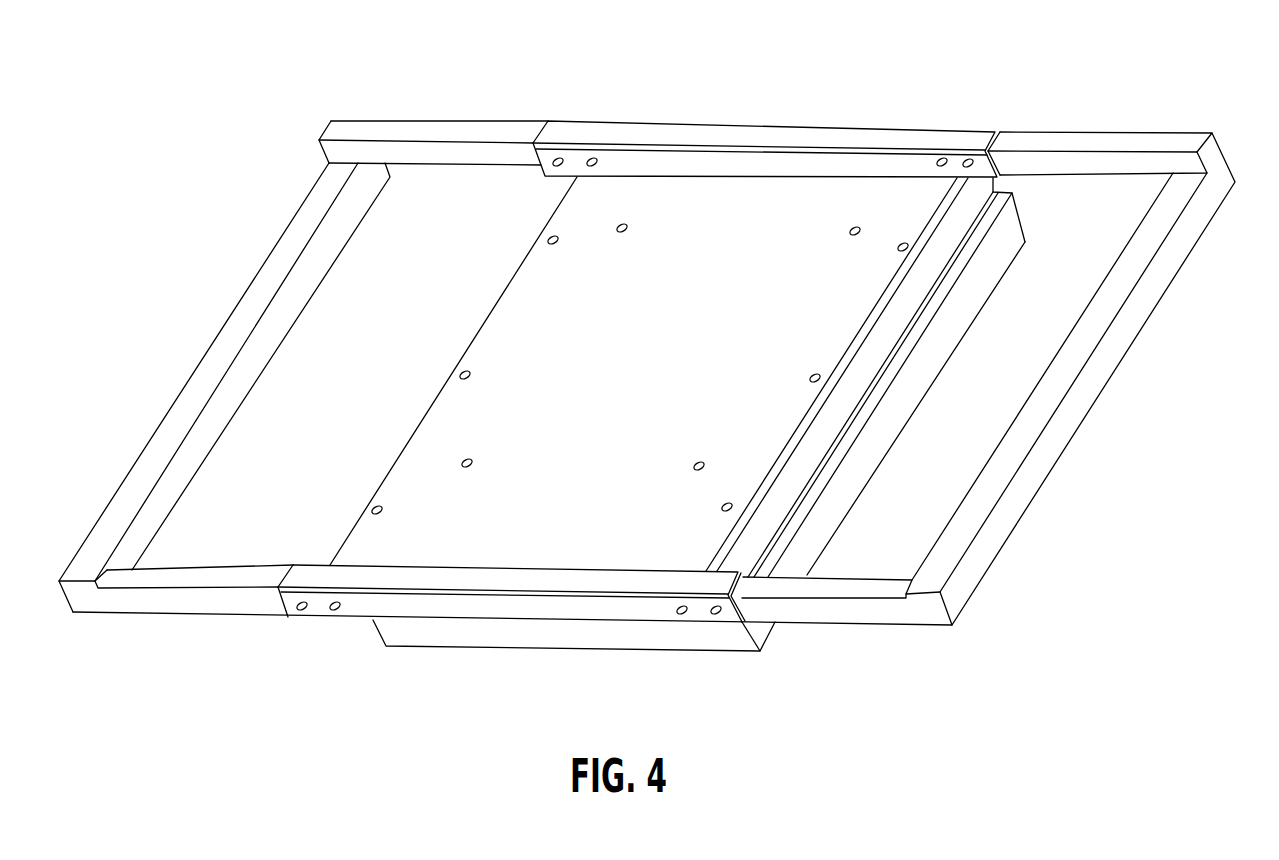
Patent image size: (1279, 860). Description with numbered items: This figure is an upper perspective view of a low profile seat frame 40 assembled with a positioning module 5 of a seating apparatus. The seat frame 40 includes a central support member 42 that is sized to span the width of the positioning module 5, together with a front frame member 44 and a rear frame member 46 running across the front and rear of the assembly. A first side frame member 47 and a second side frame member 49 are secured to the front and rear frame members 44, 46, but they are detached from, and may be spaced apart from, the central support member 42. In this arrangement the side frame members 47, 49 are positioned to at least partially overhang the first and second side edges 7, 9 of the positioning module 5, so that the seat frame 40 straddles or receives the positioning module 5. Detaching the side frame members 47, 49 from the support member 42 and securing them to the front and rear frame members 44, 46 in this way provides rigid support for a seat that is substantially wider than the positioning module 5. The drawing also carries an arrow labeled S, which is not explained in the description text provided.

The low profile seat frame 40 is at (736, 84).
The central support member 42 is at (826, 203).
The front frame member 44 is at (840, 622).
The rear frame member 46 is at (1075, 130).
The first side frame member 47 is at (270, 236).
The second side frame member 49 is at (1236, 183).
The positioning module 5 is at (975, 317).
The first side edge 7 is at (398, 456).
The second side edge 9 is at (900, 412).
The sliding direction S is at (519, 562).